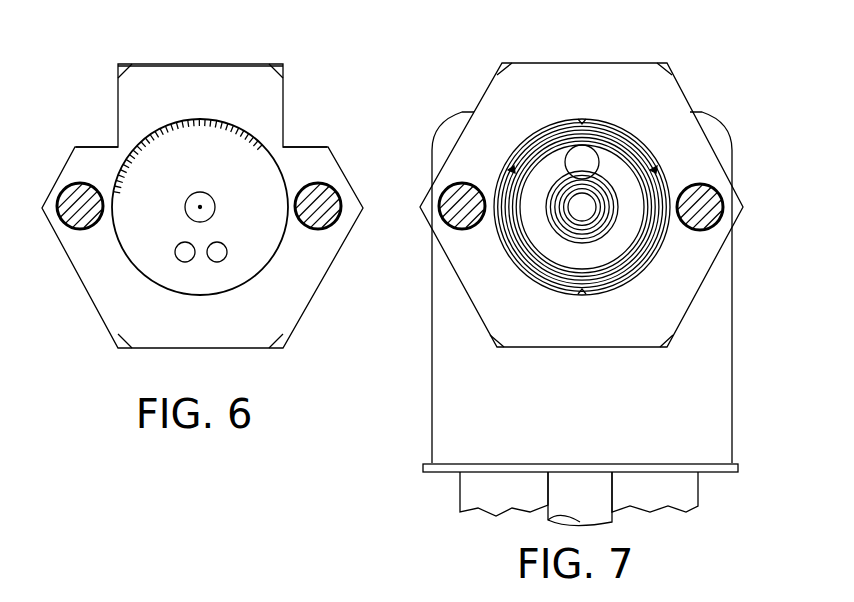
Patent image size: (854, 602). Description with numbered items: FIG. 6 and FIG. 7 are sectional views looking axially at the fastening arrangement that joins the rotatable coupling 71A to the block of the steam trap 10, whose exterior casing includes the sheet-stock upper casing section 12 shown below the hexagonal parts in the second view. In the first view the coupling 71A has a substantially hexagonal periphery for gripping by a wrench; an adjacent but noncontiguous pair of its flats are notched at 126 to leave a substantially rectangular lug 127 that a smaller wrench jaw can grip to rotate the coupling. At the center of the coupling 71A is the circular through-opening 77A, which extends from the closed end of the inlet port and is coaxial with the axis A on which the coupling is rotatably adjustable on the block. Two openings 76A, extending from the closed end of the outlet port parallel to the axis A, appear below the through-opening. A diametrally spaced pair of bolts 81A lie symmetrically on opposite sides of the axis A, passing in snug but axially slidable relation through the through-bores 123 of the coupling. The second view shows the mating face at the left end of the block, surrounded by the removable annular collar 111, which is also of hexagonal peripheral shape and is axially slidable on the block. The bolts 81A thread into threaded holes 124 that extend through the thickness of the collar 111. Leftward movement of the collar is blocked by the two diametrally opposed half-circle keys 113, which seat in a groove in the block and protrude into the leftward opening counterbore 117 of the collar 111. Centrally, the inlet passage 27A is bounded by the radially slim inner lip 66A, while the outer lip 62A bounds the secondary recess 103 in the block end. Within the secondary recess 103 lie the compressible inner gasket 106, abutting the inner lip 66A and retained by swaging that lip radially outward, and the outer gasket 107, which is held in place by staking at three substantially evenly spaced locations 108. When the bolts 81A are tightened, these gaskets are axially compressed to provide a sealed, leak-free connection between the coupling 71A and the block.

In FIG. 6, the coupling 71A is at (97, 315).
In FIG. 6, the rectangular lug 127 is at (273, 88).
In FIG. 6, the notches 126 is at (88, 140).
In FIG. 6, the bolts 81A is at (72, 215).
In FIG. 7, the bolts 81A is at (450, 195).
In FIG. 6, the through-bores 123 is at (72, 192).
In FIG. 6, the circular through-opening 77A is at (198, 195).
In FIG. 6, the axis A is at (201, 207).
In FIG. 6, the openings 76A is at (182, 248).
In FIG. 7, the annular collar 111 is at (538, 62).
In FIG. 7, the steam trap 10 is at (405, 393).
In FIG. 7, the upper casing section 12 is at (427, 427).
In FIG. 7, the threaded holes 124 is at (462, 195).
In FIG. 7, the outer lip 62A is at (522, 267).
In FIG. 7, the outer gasket 107 is at (555, 270).
In FIG. 7, the half-circle keys 113 is at (567, 290).
In FIG. 7, the counterbore 117 is at (543, 132).
In FIG. 7, the staking locations 108 is at (632, 165).
In FIG. 7, the inner lip 66A is at (596, 225).
In FIG. 7, the inner gasket 106 is at (592, 240).
In FIG. 7, the secondary recess 103 is at (587, 253).
In FIG. 7, the inlet passage 27A is at (590, 210).